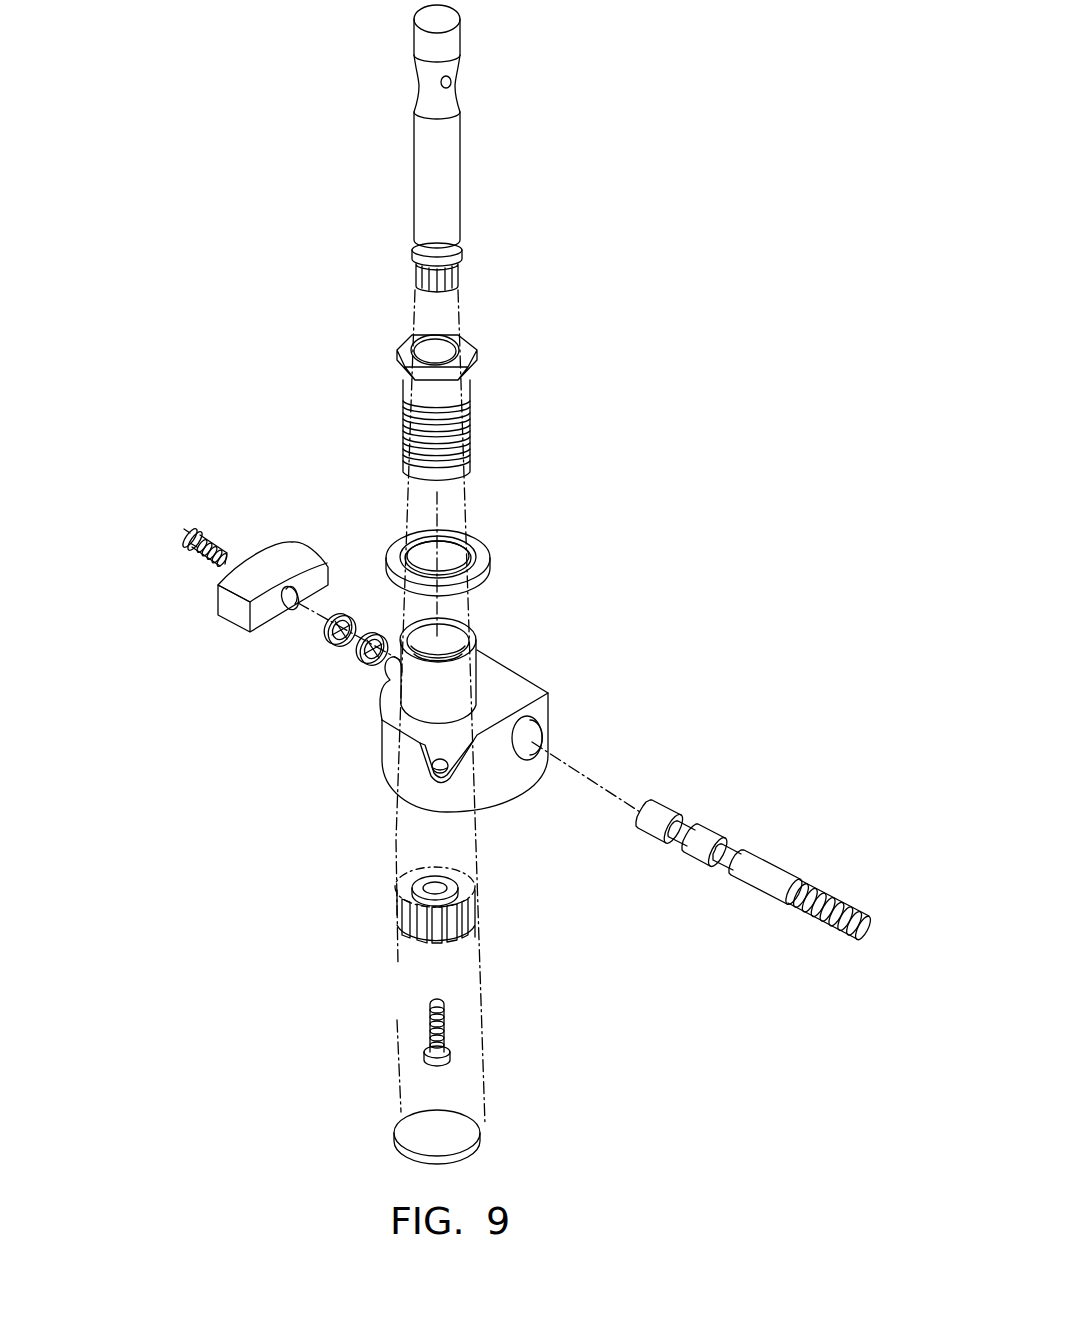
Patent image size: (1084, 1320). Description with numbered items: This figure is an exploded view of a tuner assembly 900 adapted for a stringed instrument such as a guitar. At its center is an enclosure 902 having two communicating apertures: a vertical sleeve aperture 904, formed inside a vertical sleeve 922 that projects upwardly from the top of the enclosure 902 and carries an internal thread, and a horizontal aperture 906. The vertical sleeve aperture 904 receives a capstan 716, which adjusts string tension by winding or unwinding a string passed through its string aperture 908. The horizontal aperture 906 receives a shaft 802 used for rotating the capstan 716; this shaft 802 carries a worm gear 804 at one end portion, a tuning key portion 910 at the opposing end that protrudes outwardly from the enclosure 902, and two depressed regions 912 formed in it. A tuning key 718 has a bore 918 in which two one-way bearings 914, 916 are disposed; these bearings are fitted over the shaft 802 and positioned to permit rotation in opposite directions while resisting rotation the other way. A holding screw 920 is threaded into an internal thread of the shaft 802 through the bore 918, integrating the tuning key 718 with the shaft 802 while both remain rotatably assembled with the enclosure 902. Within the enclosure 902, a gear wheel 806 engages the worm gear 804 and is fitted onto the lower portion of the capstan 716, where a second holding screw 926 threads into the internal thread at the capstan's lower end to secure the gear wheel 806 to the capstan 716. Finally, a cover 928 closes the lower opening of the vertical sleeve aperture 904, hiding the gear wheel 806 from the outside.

The tuner assembly 900 is at (250, 188).
The capstan 716 is at (491, 152).
The string aperture 908 is at (452, 86).
The tuning key 718 is at (278, 565).
The holding screw 920 is at (183, 533).
The bore 918 is at (291, 606).
The one-way bearing 914 is at (326, 641).
The one-way bearing 916 is at (362, 648).
The vertical sleeve 922 is at (463, 684).
The enclosure 902 is at (487, 712).
The horizontal aperture 906 is at (532, 740).
The vertical sleeve aperture 904 is at (437, 633).
The depressed regions 912 is at (740, 855).
The tuning key portion 910 is at (653, 825).
The shaft 802 is at (735, 848).
The worm gear 804 is at (813, 903).
The gear wheel 806 is at (467, 918).
The second holding screw 926 is at (443, 1033).
The cover 928 is at (445, 1138).